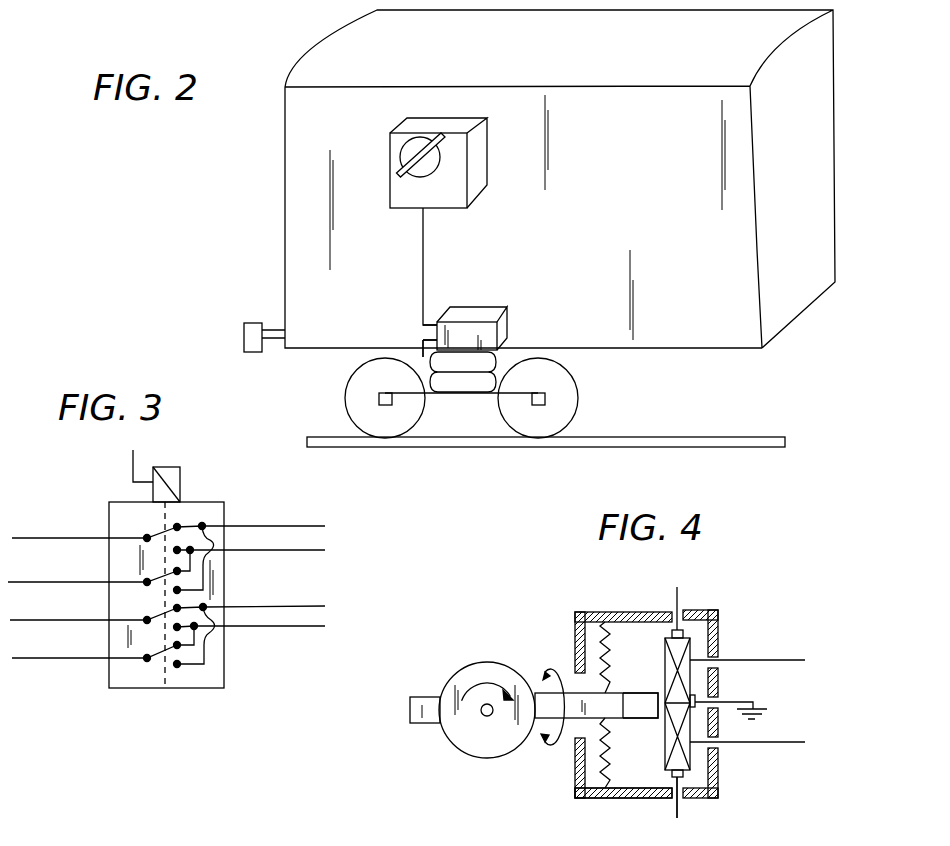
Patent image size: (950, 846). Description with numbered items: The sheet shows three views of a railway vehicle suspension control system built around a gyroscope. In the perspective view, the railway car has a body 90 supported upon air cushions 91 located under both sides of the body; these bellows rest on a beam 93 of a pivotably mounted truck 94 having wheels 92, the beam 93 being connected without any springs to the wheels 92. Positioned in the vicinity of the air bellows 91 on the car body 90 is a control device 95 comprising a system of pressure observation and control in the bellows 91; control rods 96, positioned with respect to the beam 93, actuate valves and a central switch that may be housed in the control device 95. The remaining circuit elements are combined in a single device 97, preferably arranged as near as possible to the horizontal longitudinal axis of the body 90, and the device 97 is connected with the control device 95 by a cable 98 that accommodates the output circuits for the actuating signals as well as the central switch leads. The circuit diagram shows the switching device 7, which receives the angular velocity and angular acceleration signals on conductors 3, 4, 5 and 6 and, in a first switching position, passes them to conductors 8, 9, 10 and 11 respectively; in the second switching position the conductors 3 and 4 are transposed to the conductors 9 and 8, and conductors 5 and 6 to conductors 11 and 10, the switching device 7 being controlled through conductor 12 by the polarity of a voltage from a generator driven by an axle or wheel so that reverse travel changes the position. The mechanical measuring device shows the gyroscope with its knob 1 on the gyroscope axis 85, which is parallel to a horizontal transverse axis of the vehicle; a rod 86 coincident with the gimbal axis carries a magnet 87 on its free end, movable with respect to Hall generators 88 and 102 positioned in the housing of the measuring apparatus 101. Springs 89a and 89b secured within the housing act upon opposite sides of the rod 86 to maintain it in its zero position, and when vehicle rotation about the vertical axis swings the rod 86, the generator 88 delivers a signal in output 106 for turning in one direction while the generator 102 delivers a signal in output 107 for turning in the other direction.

In FIG. 2, the control knob 1 is at (402, 157).
In FIG. 4, the control knob 1 is at (500, 745).
In FIG. 3, the conductor 3 is at (66, 538).
In FIG. 3, the conductor 4 is at (66, 582).
In FIG. 3, the conductor 5 is at (66, 620).
In FIG. 3, the conductor 6 is at (65, 658).
In FIG. 3, the switching device 7 is at (198, 502).
In FIG. 3, the conductor 8 is at (270, 526).
In FIG. 3, the conductor 9 is at (280, 550).
In FIG. 3, the conductor 10 is at (258, 606).
In FIG. 3, the conductor 11 is at (256, 626).
In FIG. 3, the conductor 12 is at (133, 470).
In FIG. 4, the gyroscope axis 85 is at (484, 717).
In FIG. 4, the rod 86 is at (572, 693).
In FIG. 4, the magnet 87 is at (647, 710).
In FIG. 4, the Hall generator 88 is at (687, 640).
In FIG. 4, the spring 89a is at (600, 752).
In FIG. 4, the spring 89b is at (618, 613).
In FIG. 2, the body 90 is at (290, 207).
In FIG. 2, the air cushion 91 is at (495, 355).
In FIG. 2, the wheel 92 is at (537, 423).
In FIG. 2, the beam 93 is at (538, 390).
In FIG. 2, the truck 94 is at (330, 377).
In FIG. 2, the control device 95 is at (497, 307).
In FIG. 2, the control rod 96 is at (424, 357).
In FIG. 2, the device 97 is at (447, 202).
In FIG. 2, the cable 98 is at (423, 250).
In FIG. 4, the measuring apparatus 101 is at (605, 798).
In FIG. 4, the Hall generator 102 is at (690, 760).
In FIG. 4, the output 106 is at (753, 660).
In FIG. 4, the output 107 is at (790, 742).